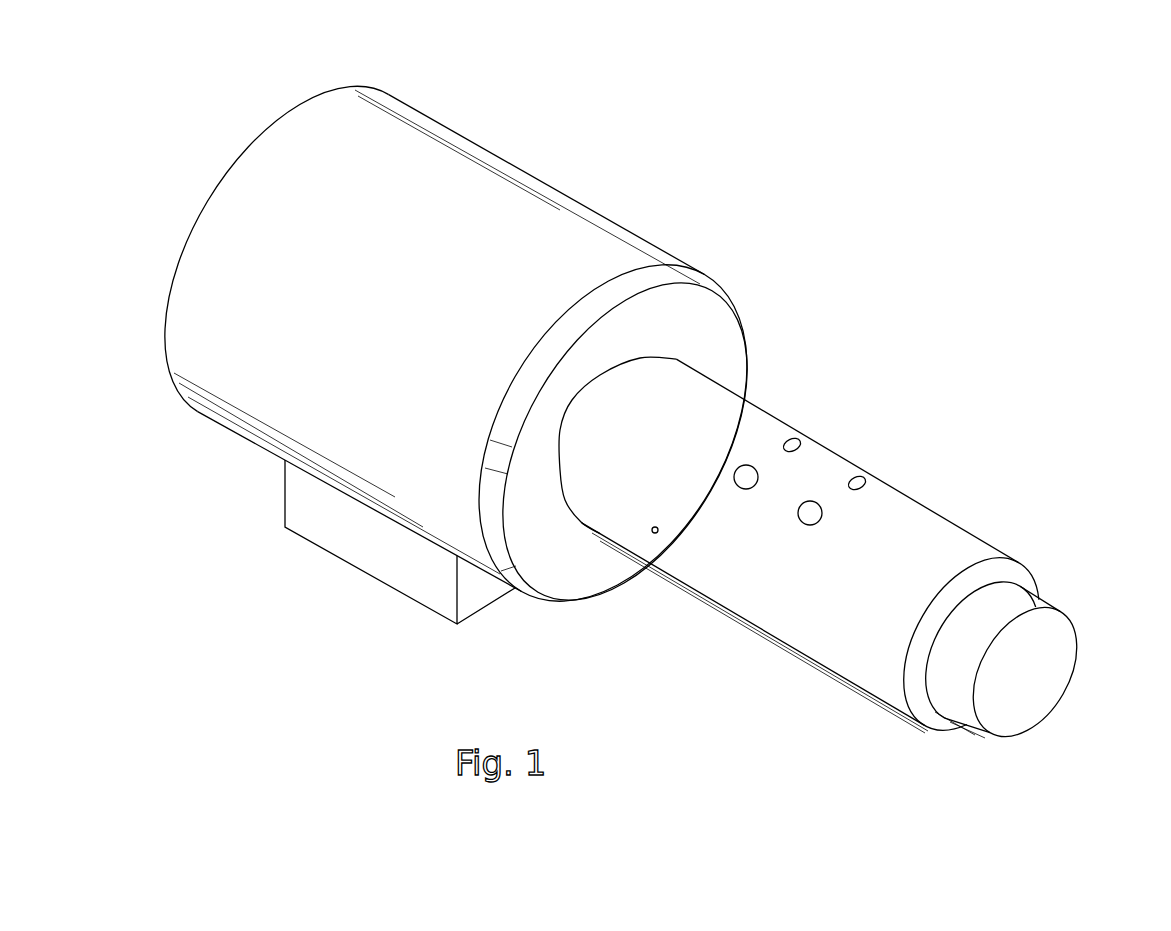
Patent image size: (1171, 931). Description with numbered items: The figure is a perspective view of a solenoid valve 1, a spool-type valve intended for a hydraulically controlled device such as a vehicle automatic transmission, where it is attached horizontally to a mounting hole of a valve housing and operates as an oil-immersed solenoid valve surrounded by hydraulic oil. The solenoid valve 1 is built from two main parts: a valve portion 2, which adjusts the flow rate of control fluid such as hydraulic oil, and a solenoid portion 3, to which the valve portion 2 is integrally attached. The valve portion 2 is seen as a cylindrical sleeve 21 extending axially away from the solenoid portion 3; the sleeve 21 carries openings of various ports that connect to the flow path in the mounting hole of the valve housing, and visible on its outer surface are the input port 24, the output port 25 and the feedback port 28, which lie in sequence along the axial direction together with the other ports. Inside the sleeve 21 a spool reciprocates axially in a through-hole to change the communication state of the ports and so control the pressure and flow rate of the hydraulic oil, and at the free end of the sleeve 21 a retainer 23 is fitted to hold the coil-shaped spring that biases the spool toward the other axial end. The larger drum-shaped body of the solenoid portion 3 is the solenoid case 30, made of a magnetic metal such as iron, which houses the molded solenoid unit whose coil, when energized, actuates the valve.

The solenoid valve 1 is at (668, 394).
The valve portion 2 is at (861, 536).
The solenoid portion 3 is at (484, 341).
The sleeve 21 is at (953, 519).
The retainer 23 is at (1042, 682).
The input port 24 is at (792, 439).
The output port 25 is at (857, 477).
The feedback port 28 is at (656, 537).
The solenoid case 30 is at (613, 214).